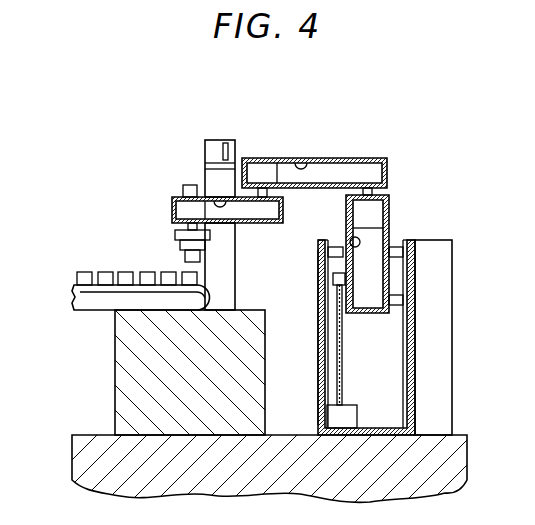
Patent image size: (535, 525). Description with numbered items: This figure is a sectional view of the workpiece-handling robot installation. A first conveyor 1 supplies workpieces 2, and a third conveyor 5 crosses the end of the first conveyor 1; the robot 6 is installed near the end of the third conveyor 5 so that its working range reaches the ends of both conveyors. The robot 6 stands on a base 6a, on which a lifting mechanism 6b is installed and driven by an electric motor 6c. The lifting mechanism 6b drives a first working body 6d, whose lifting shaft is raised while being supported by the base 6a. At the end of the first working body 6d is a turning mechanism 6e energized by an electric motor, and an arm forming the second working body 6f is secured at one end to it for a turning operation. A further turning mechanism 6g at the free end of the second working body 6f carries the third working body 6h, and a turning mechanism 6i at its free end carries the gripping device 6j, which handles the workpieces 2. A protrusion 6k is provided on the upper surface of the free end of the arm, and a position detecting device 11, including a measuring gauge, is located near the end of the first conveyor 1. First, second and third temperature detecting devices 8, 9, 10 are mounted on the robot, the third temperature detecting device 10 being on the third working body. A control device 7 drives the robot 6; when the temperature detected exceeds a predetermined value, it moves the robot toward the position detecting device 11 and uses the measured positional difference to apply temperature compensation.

The first conveyor 1 is at (90, 312).
The workpieces 2 is at (77, 277).
The third conveyor 5 is at (114, 385).
The robot 6 is at (391, 243).
The base 6a is at (319, 338).
The lifting mechanism 6b is at (344, 337).
The electric motor 6c is at (349, 405).
The first working body 6d is at (347, 220).
The turning mechanism 6e is at (374, 213).
The second working body 6f is at (374, 160).
The turning mechanism 6g is at (264, 173).
The third working body 6h is at (238, 197).
The turning mechanism 6i is at (181, 207).
The gripping device 6j is at (177, 232).
The protrusion 6k is at (190, 185).
The control device 7 is at (453, 328).
The first temperature detecting device 8 is at (389, 237).
The second temperature detecting device 9 is at (313, 173).
The third temperature detecting device 10 is at (228, 204).
The position detecting device 11 is at (219, 140).